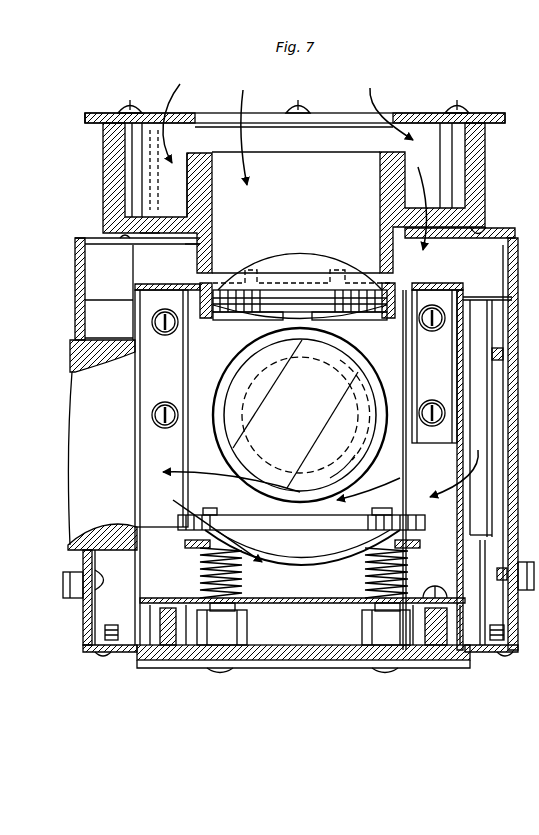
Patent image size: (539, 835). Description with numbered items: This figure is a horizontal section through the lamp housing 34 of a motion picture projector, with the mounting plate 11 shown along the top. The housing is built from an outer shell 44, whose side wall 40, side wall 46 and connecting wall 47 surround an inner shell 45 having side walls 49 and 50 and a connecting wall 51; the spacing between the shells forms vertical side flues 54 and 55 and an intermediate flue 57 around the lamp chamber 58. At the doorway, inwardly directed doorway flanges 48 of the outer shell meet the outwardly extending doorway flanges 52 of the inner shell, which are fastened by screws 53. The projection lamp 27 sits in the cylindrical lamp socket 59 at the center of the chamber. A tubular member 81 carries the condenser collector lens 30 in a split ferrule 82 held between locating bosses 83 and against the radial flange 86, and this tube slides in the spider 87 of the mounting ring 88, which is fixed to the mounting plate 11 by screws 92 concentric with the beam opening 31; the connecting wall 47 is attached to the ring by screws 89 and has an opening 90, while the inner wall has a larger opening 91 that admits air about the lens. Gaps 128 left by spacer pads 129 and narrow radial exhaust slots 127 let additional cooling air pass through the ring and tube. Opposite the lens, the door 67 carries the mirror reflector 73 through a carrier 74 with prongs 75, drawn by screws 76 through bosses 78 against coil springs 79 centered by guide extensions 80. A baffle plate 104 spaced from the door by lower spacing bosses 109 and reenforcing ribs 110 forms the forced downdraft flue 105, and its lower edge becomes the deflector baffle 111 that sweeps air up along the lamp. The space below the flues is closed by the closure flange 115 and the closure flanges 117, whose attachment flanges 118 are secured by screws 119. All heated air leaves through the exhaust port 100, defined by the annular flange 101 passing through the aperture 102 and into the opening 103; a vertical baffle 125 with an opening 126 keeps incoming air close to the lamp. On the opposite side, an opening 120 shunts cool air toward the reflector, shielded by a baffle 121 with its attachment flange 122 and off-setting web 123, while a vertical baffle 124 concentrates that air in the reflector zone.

The mounting plate 11 is at (500, 112).
The projection lamp 27 is at (248, 372).
The condenser collector lens 30 is at (298, 267).
The opening 31 is at (340, 115).
The lamp housing 34 is at (83, 678).
The side wall 40 is at (83, 631).
The outer shell 44 is at (515, 237).
The inner shell 45 is at (473, 320).
The side wall 46 is at (508, 573).
The connecting wall 47 is at (505, 228).
The doorway flanges 48 is at (96, 656).
The side wall 49 is at (137, 570).
The side wall 50 is at (465, 600).
The connecting wall 51 is at (424, 290).
The doorway flange 52 is at (128, 635).
The screws 53 is at (500, 658).
The vertical side flue 54 is at (80, 606).
The vertical side flue 55 is at (460, 592).
The intermediate flue 57 is at (85, 238).
The lamp chamber 58 is at (207, 490).
The lamp socket 59 is at (140, 440).
The door 67 is at (338, 661).
The mirror reflector 73 is at (301, 536).
The carrier 74 is at (185, 544).
The prongs 75 is at (412, 518).
The screws 76 is at (215, 669).
The bosses 78 is at (365, 626).
The coil springs 79 is at (238, 568).
The guide extensions 80 is at (245, 613).
The tubular member 81 is at (380, 181).
The split ferrule 82 is at (370, 312).
The locating bosses 83 is at (250, 268).
The radial flange 86 is at (377, 280).
The spider 87 is at (200, 179).
The mounting ring 88 is at (103, 173).
The screws 89 is at (135, 242).
The opening 90 is at (150, 245).
The opening 91 is at (192, 248).
The screws 92 is at (126, 105).
The exhaust port 100 is at (80, 441).
The annular flange 101 is at (125, 318).
The aperture 102 is at (78, 336).
The opening 103 is at (140, 330).
The baffle plate 104 is at (340, 600).
The forced downdraft flue 105 is at (255, 661).
The lower spacing bosses 109 is at (430, 640).
The reenforcing ribs 110 is at (448, 660).
The deflector baffle 111 is at (166, 608).
The closure flange 115 is at (403, 353).
The closure flanges 117 is at (461, 417).
The attachment flanges 118 is at (492, 403).
The screws 119 is at (512, 288).
The opening 120 is at (462, 442).
The baffle 121 is at (495, 312).
The attachment flange 122 is at (470, 559).
The off-setting web 123 is at (470, 528).
The vertical baffle 124 is at (418, 362).
The vertical baffle 125 is at (188, 328).
The opening 126 is at (200, 449).
The radial exhaust slots 127 is at (215, 280).
The gaps 128 is at (172, 74).
The spacer pads 129 is at (100, 118).